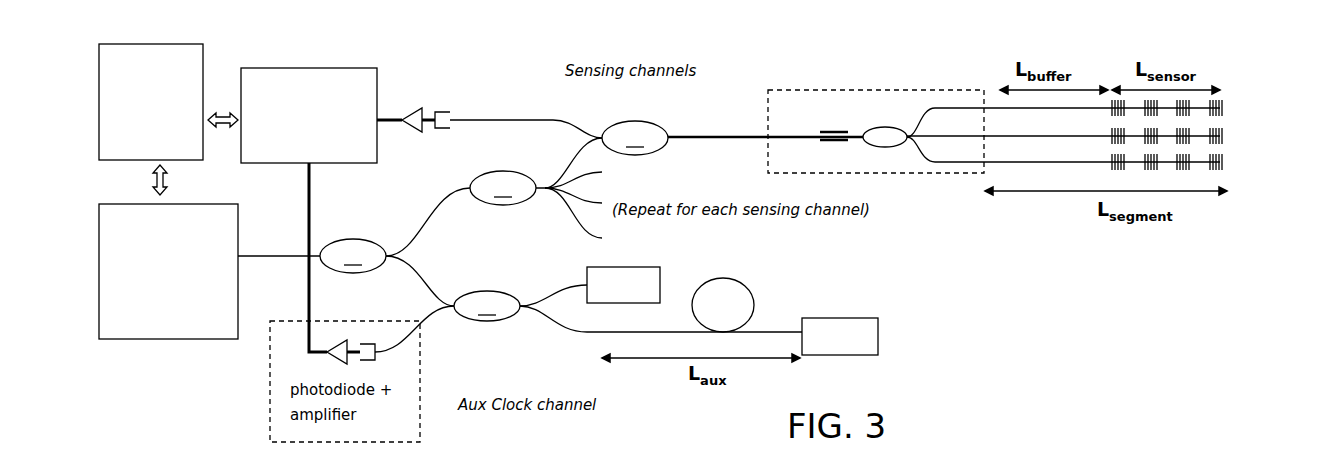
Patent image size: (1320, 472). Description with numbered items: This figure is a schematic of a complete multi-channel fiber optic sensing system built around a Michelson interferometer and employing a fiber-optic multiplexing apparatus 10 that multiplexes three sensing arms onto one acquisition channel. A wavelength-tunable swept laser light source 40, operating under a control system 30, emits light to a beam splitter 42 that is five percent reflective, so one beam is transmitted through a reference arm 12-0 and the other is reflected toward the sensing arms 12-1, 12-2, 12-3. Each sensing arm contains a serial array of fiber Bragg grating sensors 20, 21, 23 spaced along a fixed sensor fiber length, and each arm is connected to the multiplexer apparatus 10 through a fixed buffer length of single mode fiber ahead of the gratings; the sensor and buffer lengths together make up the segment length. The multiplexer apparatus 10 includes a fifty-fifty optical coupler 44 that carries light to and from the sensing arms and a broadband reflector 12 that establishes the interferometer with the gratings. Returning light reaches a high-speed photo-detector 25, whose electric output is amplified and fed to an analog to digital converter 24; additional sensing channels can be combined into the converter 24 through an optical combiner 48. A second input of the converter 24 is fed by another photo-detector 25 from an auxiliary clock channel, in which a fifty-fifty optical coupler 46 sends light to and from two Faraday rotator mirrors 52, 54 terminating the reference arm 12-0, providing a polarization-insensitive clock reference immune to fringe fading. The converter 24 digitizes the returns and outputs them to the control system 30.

The fiber-optic multiplexing apparatus 10 is at (780, 113).
The broadband reflector 12 is at (832, 128).
The reference arm 12-0 is at (543, 288).
The sensing arm 12-1 is at (1103, 108).
The sensing arm 12-2 is at (1103, 136).
The sensing arm 12-3 is at (1103, 162).
The fiber Bragg grating sensor 20 is at (1124, 168).
The fiber Bragg grating sensor 21 is at (1157, 168).
The fiber Bragg grating sensor 23 is at (1218, 168).
The analog to digital converter (DAQ) 24 is at (346, 93).
The high-speed photo-detector 25 is at (447, 110).
The control system 30 is at (178, 66).
The wavelength-tunable swept laser light source 40 is at (168, 271).
The beam splitter 42 is at (353, 244).
The 50:50 optical coupler 44 is at (885, 127).
The 50:50 optical coupler 46 is at (487, 321).
The optical combiner 48 is at (503, 204).
The Faraday rotator mirror 52 is at (660, 267).
The Faraday rotator mirror 54 is at (878, 318).